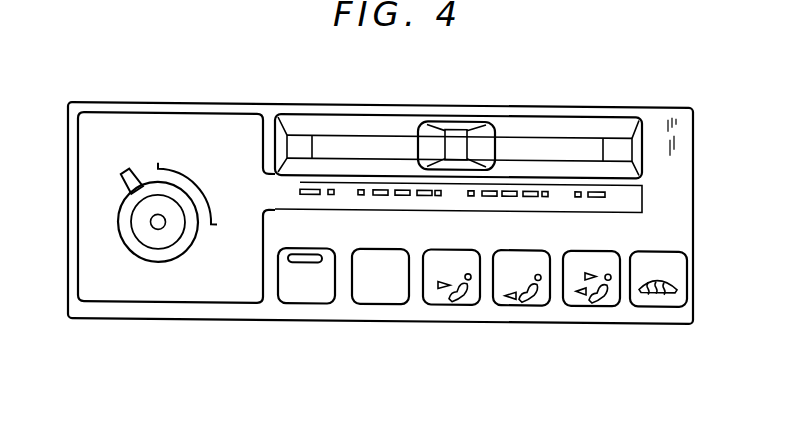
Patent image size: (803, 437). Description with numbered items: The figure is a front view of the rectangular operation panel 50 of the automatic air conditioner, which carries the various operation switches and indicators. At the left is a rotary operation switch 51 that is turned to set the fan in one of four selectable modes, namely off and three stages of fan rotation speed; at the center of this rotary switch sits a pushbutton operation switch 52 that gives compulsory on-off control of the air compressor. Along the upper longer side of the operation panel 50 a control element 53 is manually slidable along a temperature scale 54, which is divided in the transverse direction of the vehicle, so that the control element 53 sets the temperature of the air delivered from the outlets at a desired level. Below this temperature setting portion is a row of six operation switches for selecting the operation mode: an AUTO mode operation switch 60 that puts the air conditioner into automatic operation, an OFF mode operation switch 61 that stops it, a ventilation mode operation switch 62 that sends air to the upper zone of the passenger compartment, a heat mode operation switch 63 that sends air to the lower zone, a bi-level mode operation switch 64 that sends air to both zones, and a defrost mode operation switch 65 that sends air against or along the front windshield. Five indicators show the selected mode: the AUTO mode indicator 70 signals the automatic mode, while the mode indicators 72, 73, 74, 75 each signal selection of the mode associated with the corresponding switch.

The operation panel 50 is at (245, 92).
The operation switch 51 is at (118, 221).
The pushbutton operation switch 52 is at (152, 246).
The control element 53 is at (460, 122).
The temperature scale 54 is at (606, 197).
The "AUTO" mode operation switch 60 is at (283, 284).
The "OFF" mode operation switch 61 is at (360, 303).
The ventilation mode operation switch 62 is at (438, 306).
The heat mode operation switch 63 is at (538, 303).
The bi-level mode operation switch 64 is at (607, 302).
The defrost mode operation switch 65 is at (677, 266).
The "AUTO" mode indicator 70 is at (305, 254).
The mode indicator 72 is at (466, 298).
The mode indicator 73 is at (528, 297).
The mode indicator 74 is at (583, 297).
The mode indicator 75 is at (673, 289).